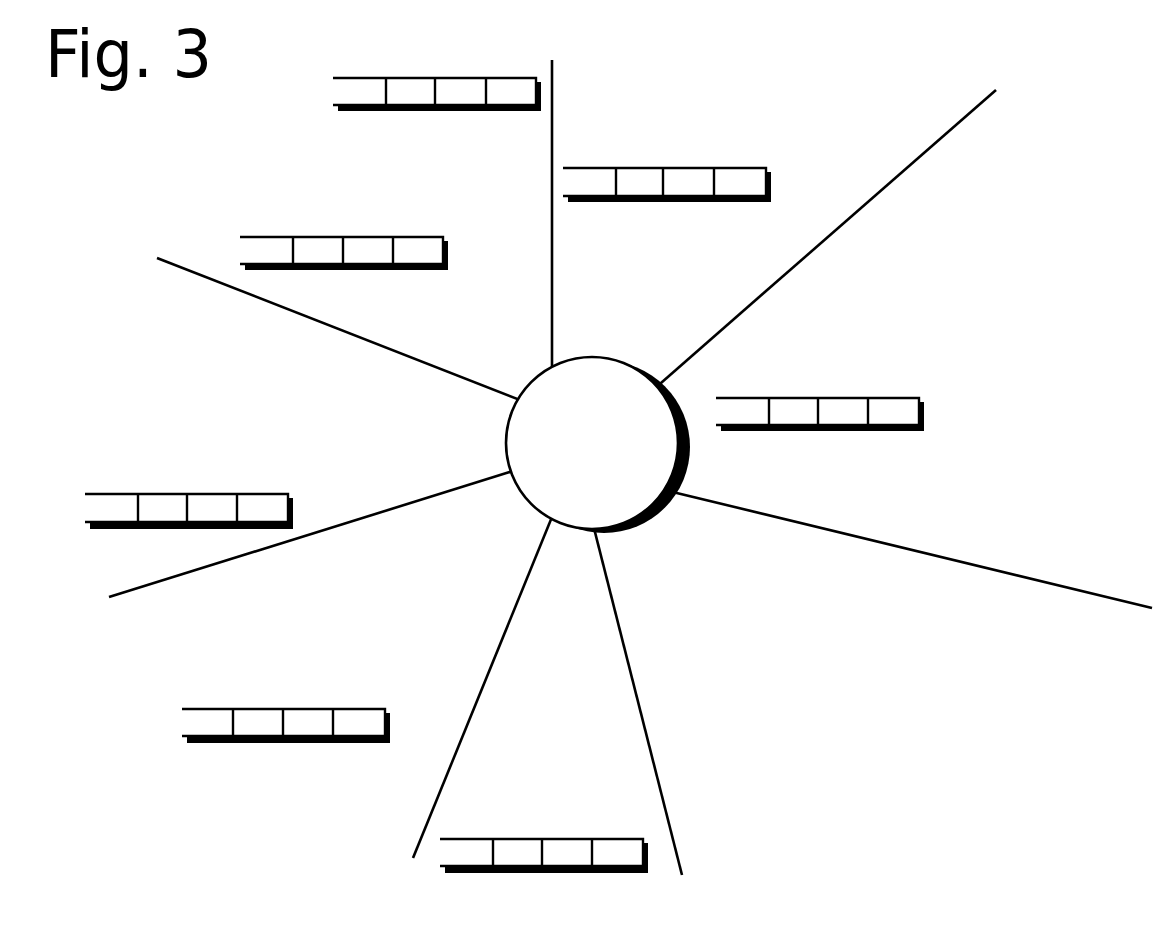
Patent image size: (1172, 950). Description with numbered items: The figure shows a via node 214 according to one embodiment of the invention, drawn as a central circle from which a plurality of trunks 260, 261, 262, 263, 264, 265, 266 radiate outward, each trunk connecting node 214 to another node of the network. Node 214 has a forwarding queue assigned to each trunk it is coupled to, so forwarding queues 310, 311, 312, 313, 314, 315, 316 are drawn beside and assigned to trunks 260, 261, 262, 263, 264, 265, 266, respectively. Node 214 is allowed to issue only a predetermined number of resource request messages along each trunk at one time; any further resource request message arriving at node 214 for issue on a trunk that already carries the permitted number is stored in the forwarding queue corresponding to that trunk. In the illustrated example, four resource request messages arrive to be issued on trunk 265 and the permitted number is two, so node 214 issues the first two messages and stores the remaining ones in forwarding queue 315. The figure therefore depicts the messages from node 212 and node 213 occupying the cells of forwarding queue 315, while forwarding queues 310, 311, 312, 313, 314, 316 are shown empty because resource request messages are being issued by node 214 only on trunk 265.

The via node 214 is at (617, 358).
The trunk 260 is at (437, 366).
The trunk 261 is at (407, 503).
The trunk 262 is at (499, 645).
The trunk 263 is at (638, 707).
The trunk 264 is at (553, 105).
The trunk 265 is at (930, 150).
The trunk 266 is at (1020, 575).
The forwarding queue 310 is at (350, 237).
The forwarding queue 311 is at (240, 494).
The forwarding queue 312 is at (335, 709).
The forwarding queue 313 is at (567, 839).
The forwarding queue 314 is at (452, 78).
The forwarding queue 315 is at (667, 155).
The forwarding queue 316 is at (817, 398).
The node 212 is at (740, 184).
The node 213 is at (688, 184).